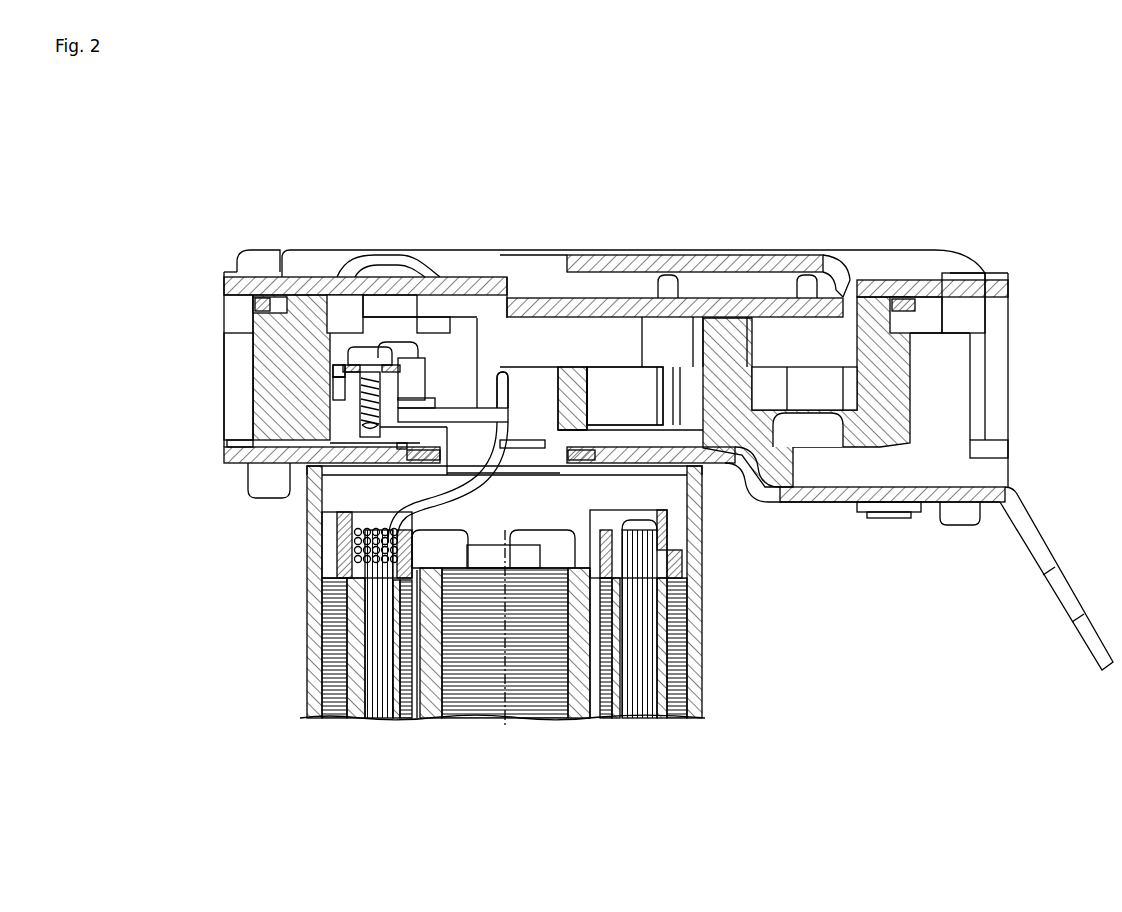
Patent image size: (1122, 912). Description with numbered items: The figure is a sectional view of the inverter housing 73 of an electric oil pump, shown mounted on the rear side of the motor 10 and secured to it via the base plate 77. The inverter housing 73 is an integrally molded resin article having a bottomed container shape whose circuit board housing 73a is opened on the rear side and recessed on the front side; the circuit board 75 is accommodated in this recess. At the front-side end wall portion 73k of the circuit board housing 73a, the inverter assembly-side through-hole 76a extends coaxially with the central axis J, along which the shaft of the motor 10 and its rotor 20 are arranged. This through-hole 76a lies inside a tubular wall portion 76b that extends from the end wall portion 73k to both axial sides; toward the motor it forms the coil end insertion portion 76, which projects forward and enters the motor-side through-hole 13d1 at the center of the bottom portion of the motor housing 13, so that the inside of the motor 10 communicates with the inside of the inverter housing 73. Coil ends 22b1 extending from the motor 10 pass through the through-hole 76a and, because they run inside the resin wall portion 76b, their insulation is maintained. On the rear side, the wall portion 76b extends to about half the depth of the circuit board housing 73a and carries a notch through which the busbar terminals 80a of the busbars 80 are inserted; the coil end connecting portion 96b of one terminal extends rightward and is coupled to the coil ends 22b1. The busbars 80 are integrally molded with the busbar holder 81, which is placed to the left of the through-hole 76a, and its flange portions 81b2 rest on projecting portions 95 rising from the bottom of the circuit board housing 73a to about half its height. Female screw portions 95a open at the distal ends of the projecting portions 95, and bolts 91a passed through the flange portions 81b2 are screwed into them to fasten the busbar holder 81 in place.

The motor 10 is at (479, 634).
The motor housing 13 is at (312, 682).
The motor-side through-hole 13d1 is at (537, 478).
The rotor 20 is at (491, 640).
The coil ends 22b1 is at (473, 483).
The central axis J is at (505, 730).
The inverter housing 73 is at (1015, 327).
The circuit board housing 73a is at (458, 337).
The end wall portion 73k is at (657, 433).
The circuit board 75 is at (528, 307).
The coil end insertion portion 76 is at (547, 403).
The inverter assembly-side through-hole 76a is at (517, 450).
The tubular wall portion 76b is at (573, 392).
The base plate 77 is at (232, 455).
The busbars 80 is at (345, 362).
The flange portions 81b2 is at (339, 371).
The busbar terminals 80a is at (477, 405).
The coil end connecting portion 96b is at (502, 390).
The busbar holder 81 is at (402, 350).
The bolts 91a is at (363, 350).
The projecting portions 95 is at (348, 390).
The female screw portions 95a is at (358, 415).